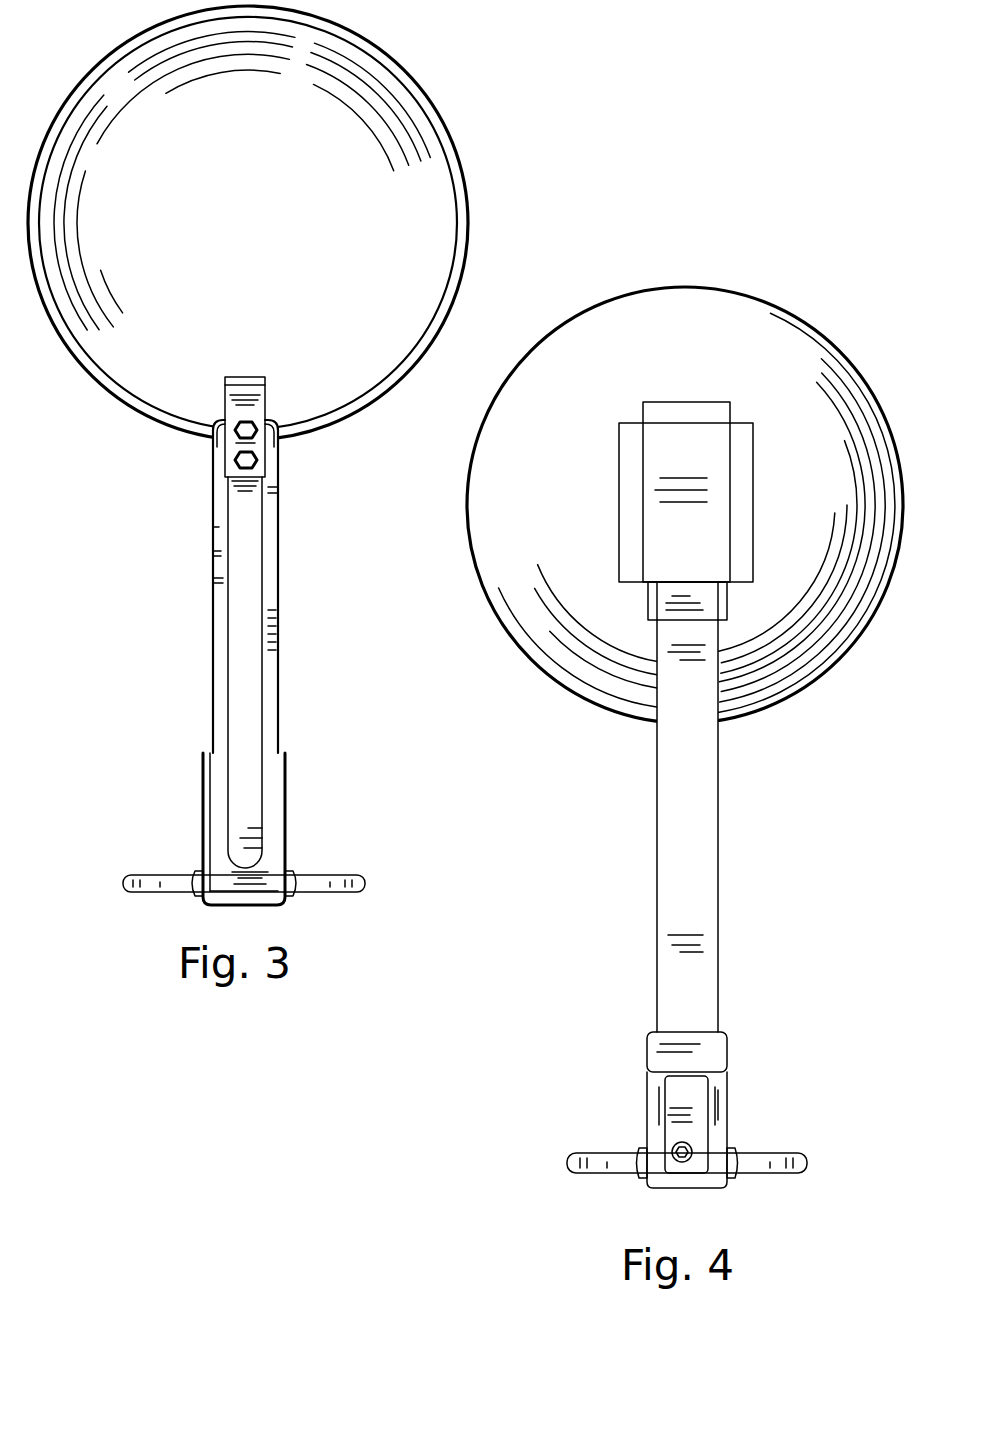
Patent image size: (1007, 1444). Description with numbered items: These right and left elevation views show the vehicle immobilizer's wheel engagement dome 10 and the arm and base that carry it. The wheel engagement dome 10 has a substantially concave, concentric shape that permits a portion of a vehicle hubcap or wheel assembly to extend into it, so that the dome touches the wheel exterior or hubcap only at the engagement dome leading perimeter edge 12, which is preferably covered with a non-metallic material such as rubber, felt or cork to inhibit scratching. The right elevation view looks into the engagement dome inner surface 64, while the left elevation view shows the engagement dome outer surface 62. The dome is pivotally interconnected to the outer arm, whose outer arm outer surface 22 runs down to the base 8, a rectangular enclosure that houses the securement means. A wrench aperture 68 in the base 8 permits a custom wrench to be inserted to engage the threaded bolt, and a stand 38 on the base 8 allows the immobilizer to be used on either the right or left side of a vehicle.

In FIG. 3, the wheel engagement dome 10 is at (488, 97).
In FIG. 4, the wheel engagement dome 10 is at (752, 254).
In FIG. 3, the engagement dome leading perimeter edge 12 is at (465, 178).
In FIG. 3, the engagement dome inner surface 64 is at (370, 283).
In FIG. 3, the stand 38 is at (318, 872).
In FIG. 4, the stand 38 is at (588, 1152).
In FIG. 4, the engagement dome outer surface 62 is at (740, 353).
In FIG. 4, the outer arm outer surface 22 is at (697, 887).
In FIG. 4, the base 8 is at (727, 1098).
In FIG. 4, the wrench aperture 68 is at (678, 1160).